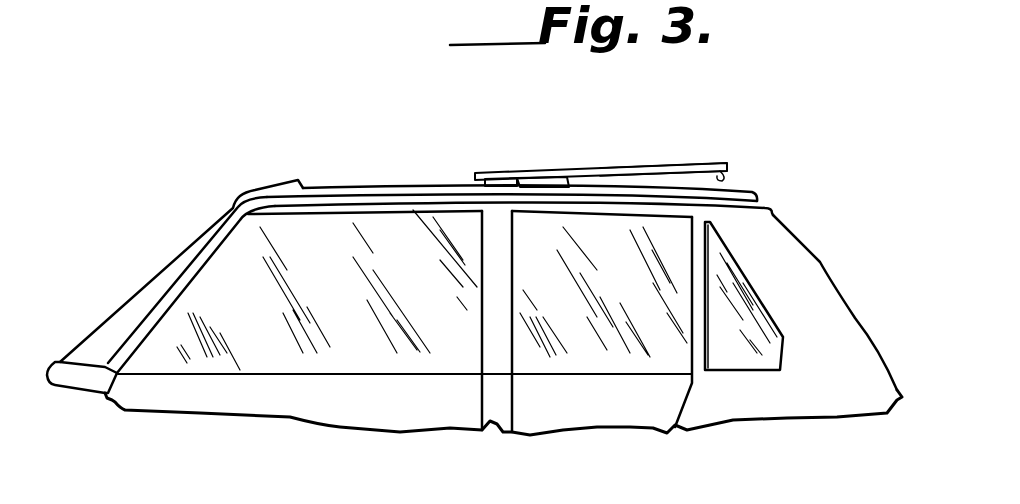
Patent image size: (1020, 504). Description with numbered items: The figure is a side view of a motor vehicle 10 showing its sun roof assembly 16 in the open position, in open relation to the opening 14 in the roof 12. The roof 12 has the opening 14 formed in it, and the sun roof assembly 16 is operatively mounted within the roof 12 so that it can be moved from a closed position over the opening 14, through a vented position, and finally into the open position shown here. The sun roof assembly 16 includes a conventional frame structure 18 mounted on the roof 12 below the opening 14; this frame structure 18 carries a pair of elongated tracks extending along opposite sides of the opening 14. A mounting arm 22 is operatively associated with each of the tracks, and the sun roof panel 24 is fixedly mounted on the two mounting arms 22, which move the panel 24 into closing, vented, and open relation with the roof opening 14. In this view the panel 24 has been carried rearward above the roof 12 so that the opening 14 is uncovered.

The motor vehicle 10 is at (823, 262).
The roof 12 is at (733, 190).
The opening 14 is at (300, 180).
The sun roof assembly 16 is at (585, 158).
The frame structure 18 is at (677, 165).
The mounting arm 22 is at (507, 177).
The sun roof panel 24 is at (560, 167).